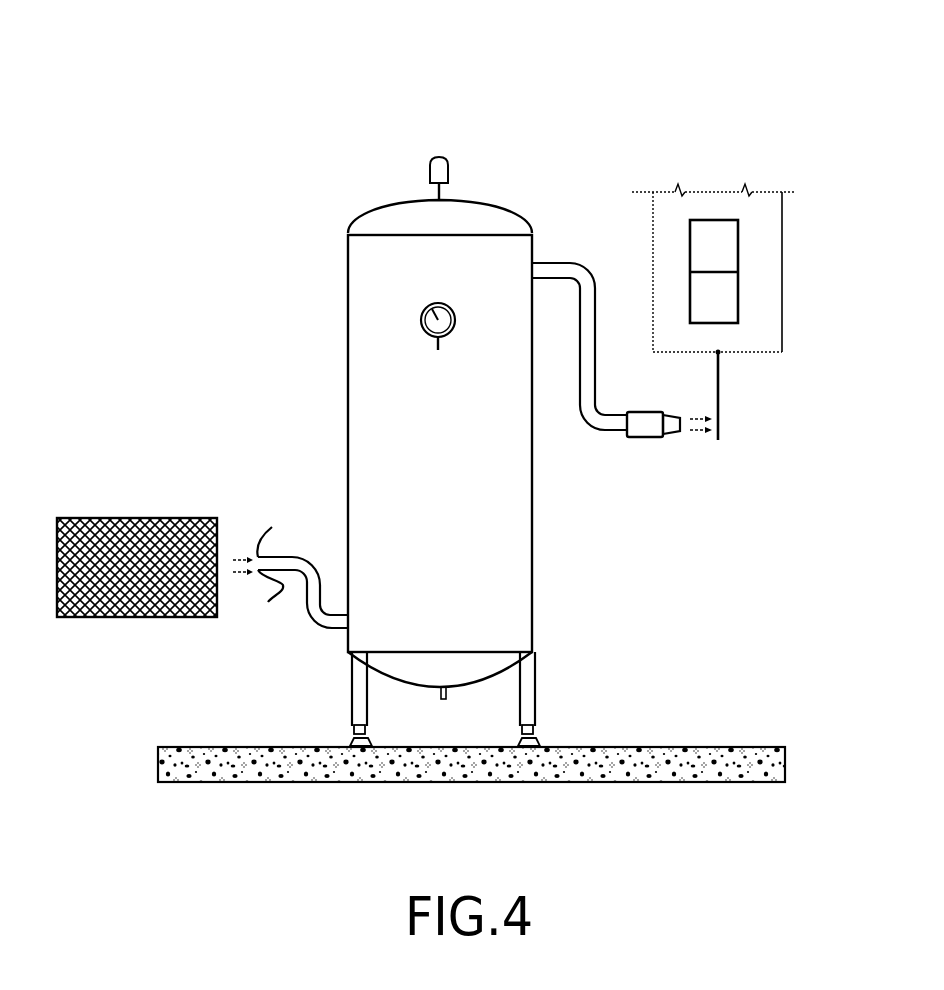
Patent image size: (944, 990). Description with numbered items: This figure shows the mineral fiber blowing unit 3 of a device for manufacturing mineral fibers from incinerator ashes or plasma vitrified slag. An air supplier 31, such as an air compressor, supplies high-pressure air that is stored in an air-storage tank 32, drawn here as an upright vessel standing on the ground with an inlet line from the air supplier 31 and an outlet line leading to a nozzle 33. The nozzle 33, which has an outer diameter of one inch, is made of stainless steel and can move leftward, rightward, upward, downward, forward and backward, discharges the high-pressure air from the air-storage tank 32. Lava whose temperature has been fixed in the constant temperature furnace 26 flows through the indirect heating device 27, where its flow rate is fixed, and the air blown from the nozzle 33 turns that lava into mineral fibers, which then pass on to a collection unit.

The mineral fiber blowing unit 3 is at (459, 138).
The constant temperature furnace 26 is at (740, 290).
The indirect heating device 27 is at (718, 352).
The air supplier 31 is at (133, 518).
The air-storage tank 32 is at (348, 295).
The nozzle 33 is at (655, 440).